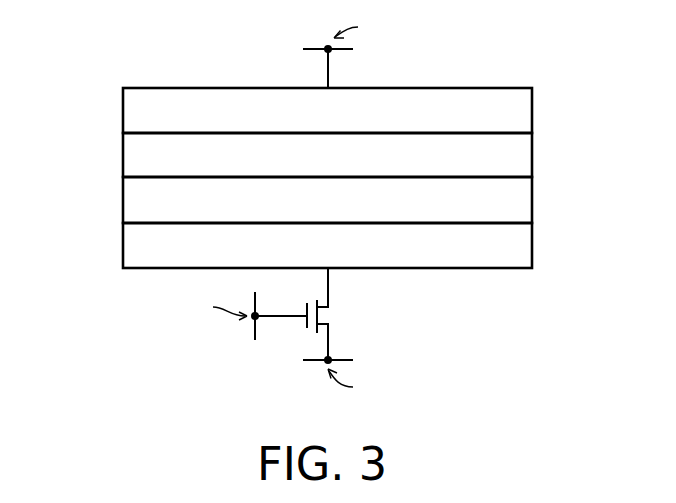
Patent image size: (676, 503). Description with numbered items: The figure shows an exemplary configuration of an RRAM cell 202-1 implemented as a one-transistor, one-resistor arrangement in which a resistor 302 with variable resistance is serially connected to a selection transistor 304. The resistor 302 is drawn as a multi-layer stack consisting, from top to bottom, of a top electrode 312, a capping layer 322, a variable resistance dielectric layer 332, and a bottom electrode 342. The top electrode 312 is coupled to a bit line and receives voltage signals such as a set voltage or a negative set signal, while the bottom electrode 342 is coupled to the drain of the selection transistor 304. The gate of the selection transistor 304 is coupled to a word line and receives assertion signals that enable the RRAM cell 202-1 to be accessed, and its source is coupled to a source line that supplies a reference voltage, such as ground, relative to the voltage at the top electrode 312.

The RRAM cell 202-1 is at (331, 216).
The resistor 302 is at (320, 177).
The top electrode (TE) 312 is at (523, 109).
The capping layer 322 is at (523, 154).
The variable resistance dielectric (VRD) layer 332 is at (525, 202).
The bottom electrode (BE) 342 is at (523, 245).
The selection transistor 304 is at (348, 315).